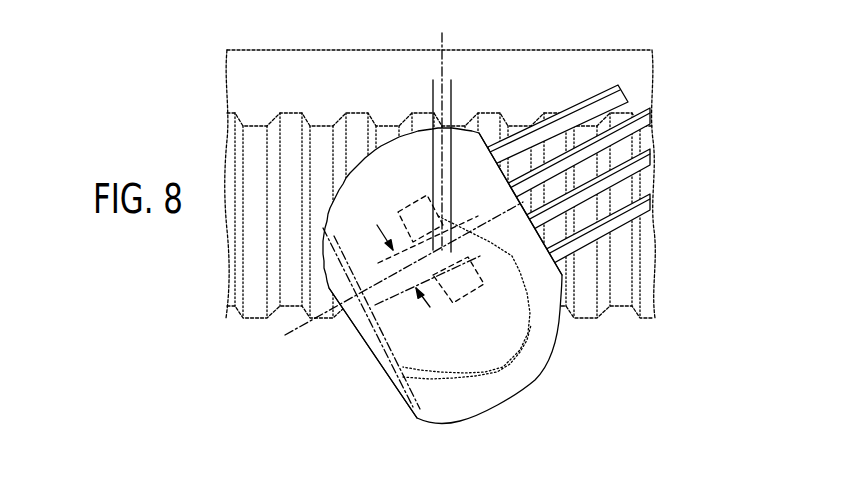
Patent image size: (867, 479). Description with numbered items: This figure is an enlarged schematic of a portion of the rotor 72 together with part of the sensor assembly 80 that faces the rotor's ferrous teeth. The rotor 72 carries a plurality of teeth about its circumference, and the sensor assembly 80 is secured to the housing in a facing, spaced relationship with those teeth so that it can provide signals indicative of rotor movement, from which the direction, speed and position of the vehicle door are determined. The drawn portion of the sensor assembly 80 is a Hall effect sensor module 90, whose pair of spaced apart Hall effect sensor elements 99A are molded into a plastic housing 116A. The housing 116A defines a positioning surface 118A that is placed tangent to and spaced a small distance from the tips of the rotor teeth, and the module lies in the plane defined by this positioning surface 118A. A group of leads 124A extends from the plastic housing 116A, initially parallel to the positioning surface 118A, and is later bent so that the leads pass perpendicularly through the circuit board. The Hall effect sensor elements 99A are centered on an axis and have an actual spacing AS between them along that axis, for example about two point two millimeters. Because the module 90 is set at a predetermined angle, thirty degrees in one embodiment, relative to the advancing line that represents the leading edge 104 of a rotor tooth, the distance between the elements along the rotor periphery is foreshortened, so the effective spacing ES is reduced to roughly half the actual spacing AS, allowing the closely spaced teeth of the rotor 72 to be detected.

The rotor 72 is at (337, 98).
The sensor assembly 80 is at (178, 333).
The Hall effect sensor module 90 is at (445, 289).
The Hall effect sensor elements 99A is at (553, 285).
The leading edge 104 is at (443, 50).
The plastic housing 116A is at (401, 398).
The positioning surface 118A is at (477, 358).
The group of leads 124A is at (640, 215).
The actual spacing AS is at (441, 312).
The effective spacing ES is at (393, 90).